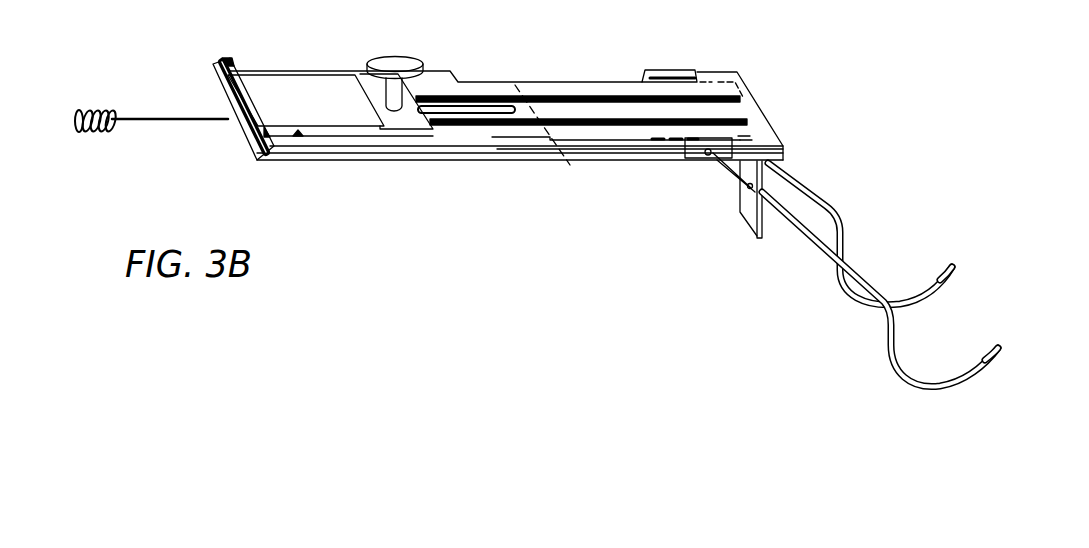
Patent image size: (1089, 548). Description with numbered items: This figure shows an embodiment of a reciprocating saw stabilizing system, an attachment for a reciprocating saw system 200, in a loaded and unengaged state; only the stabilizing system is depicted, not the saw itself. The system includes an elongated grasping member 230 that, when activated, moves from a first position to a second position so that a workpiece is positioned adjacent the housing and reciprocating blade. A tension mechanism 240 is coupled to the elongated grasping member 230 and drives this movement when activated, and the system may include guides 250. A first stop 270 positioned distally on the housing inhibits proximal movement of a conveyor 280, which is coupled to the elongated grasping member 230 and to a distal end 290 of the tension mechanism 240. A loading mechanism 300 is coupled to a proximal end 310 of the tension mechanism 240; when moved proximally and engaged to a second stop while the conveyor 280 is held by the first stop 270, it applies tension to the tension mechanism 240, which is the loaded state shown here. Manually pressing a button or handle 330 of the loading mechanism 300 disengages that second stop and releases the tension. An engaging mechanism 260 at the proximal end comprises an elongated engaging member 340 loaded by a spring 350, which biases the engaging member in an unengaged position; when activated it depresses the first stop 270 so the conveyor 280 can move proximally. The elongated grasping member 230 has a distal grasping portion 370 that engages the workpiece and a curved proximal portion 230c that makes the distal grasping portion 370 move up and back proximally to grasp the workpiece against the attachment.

The reciprocating saw system 200 is at (406, 197).
The elongated grasping member 230 is at (872, 275).
The proximal portion 230c is at (826, 256).
The tension mechanism 240 is at (557, 97).
The guides 250 is at (746, 231).
The engaging mechanism 260 is at (82, 133).
The first stop 270 is at (748, 118).
The conveyor 280 is at (660, 87).
The distal end of the tension mechanism 290 is at (738, 101).
The loading mechanism 300 is at (283, 87).
The proximal end of the tension mechanism 310 is at (421, 88).
The button or handle 330 is at (390, 57).
The elongated engaging member 340 is at (188, 121).
The spring 350 is at (100, 110).
The distal grasping portion 370 is at (956, 275).